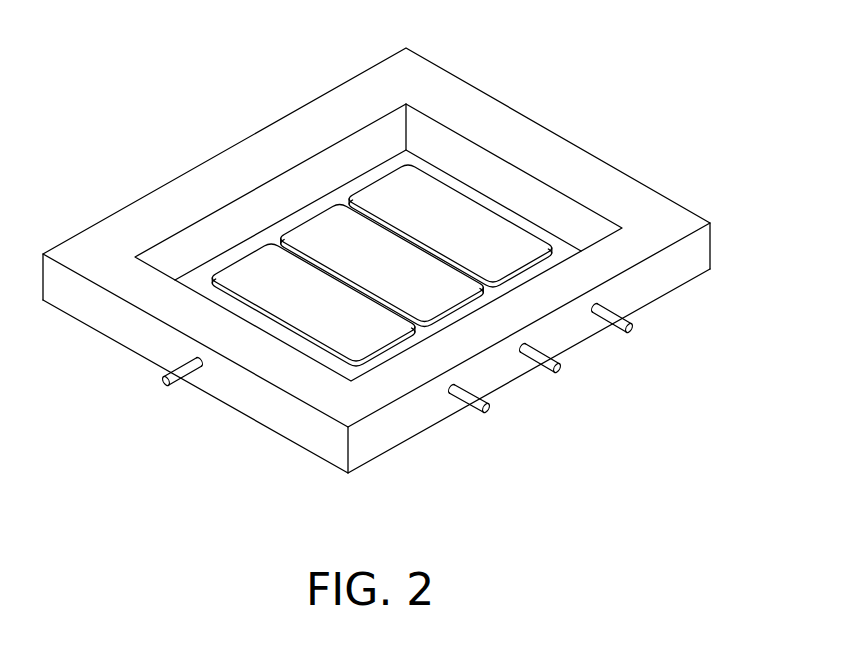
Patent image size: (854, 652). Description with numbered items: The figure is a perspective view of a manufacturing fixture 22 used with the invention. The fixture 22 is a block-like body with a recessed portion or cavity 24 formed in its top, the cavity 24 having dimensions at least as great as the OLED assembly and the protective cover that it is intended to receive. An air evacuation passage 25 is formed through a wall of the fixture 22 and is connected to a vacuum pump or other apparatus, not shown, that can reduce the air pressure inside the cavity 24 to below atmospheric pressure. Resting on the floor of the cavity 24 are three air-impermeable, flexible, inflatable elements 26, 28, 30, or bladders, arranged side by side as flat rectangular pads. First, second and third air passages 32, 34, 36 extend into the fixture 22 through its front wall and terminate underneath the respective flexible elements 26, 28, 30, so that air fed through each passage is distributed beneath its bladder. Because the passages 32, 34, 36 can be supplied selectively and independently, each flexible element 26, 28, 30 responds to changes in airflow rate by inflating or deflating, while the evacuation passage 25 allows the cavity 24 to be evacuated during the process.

The fixture 22 is at (609, 85).
The cavity 24 is at (342, 193).
The air evacuation passage 25 is at (165, 366).
The flexible element 26 is at (345, 335).
The flexible element 28 is at (325, 237).
The flexible element 30 is at (430, 217).
The first air passage 32 is at (478, 406).
The second air passage 34 is at (547, 371).
The third air passage 36 is at (622, 331).